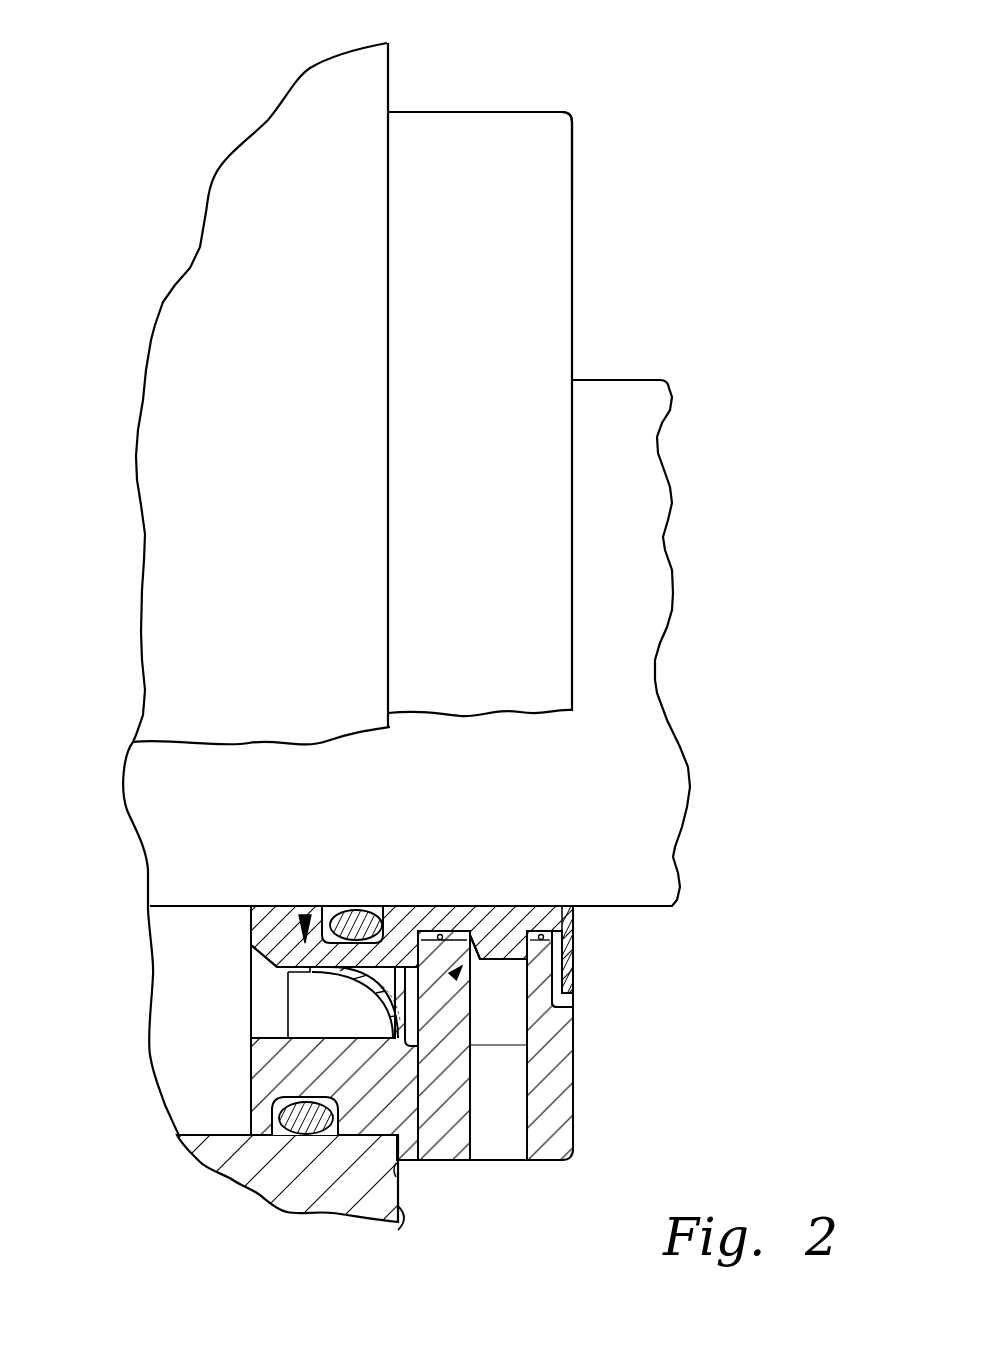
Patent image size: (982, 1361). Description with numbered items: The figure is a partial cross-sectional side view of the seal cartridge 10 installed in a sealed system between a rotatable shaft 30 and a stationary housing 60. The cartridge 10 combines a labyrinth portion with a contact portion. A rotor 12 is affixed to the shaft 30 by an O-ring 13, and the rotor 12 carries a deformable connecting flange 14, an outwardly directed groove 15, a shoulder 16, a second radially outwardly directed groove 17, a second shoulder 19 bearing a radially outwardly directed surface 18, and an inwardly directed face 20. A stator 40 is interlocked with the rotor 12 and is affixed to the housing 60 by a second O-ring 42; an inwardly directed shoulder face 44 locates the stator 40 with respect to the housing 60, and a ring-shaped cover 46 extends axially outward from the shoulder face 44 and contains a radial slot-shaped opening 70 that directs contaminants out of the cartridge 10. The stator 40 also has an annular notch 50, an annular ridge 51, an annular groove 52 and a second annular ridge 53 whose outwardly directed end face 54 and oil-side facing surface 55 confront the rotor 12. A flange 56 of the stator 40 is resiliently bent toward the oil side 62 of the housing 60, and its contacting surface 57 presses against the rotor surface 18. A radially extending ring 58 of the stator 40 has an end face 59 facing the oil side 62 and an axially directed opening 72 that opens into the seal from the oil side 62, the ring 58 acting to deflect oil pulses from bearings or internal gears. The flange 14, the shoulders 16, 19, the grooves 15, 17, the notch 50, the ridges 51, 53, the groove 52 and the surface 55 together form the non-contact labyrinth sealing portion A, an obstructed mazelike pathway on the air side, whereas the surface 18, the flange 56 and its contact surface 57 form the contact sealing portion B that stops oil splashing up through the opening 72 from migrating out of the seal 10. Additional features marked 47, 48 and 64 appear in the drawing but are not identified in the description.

The seal cartridge 10 is at (622, 150).
The rotor 12 is at (247, 940).
The O-ring 13 is at (353, 908).
The connecting flange 14 is at (575, 934).
The outwardly directed groove 15 is at (545, 935).
The shoulder 16 is at (490, 937).
The second radially outwardly directed groove 17 is at (433, 930).
The radially outwardly directed surface 18 is at (362, 918).
The second shoulder 19 is at (443, 940).
The inwardly directed face 20 is at (497, 933).
The rotatable shaft 30 is at (622, 395).
The stator 40 is at (450, 425).
The O-ring 42 is at (272, 1108).
The shoulder face 44 is at (400, 1182).
The ring-shaped cover 46 is at (447, 110).
The sleeve edge 47 is at (572, 117).
The outer surface 48 is at (575, 1104).
The annular notch 50 is at (562, 1003).
The annular ridge 51 is at (548, 982).
The annular groove 52 is at (502, 998).
The second annular ridge 53 is at (460, 918).
The outwardly directed end face 54 is at (487, 1047).
The oil-side facing surface 55 is at (380, 1010).
The flange 56 is at (285, 967).
The contacting surface 57 is at (320, 958).
The radially extending ring 58 is at (250, 1092).
The end face 59 is at (250, 1040).
The stationary housing 60 is at (247, 435).
The oil side 62 is at (178, 1083).
The shaft ridge 64 is at (400, 1210).
The radial slot-shaped opening 70 is at (503, 1162).
The axially directed opening 72 is at (275, 1005).
The labyrinth sealing portion A is at (452, 977).
The contact sealing portion B is at (302, 915).